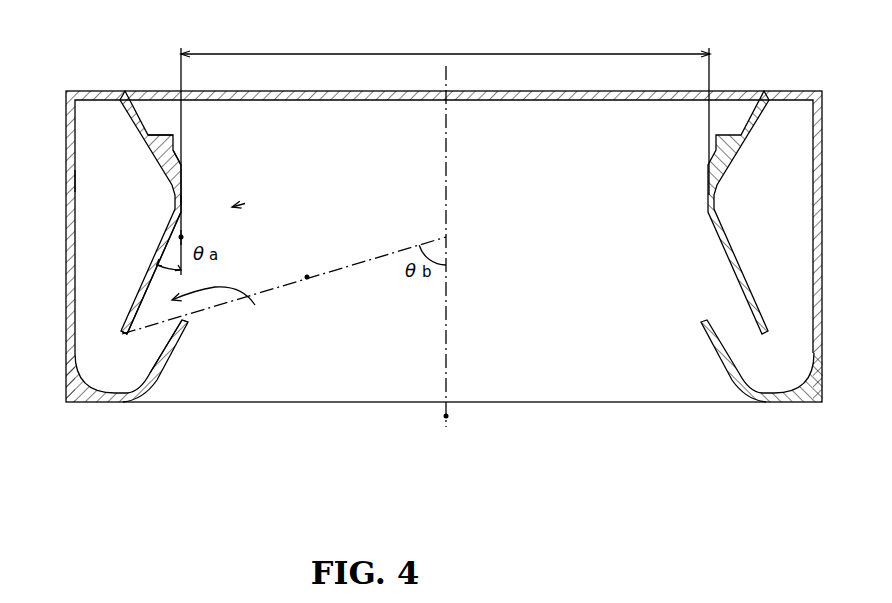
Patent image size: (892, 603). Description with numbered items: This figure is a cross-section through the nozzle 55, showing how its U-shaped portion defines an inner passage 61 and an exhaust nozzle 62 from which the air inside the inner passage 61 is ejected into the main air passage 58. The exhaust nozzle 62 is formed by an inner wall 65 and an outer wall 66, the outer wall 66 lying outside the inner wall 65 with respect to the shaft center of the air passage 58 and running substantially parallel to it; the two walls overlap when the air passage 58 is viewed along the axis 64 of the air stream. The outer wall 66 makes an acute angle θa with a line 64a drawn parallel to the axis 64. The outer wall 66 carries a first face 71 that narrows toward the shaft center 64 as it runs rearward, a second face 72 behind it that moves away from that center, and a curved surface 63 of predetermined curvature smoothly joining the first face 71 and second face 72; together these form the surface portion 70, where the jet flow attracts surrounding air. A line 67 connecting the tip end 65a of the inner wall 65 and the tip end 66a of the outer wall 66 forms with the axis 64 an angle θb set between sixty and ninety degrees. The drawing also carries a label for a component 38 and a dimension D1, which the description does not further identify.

The nozzle 55 is at (82, 90).
The sheet member (hook bracket) 38 is at (112, 90).
The air passage 58 is at (181, 163).
The curved surface 63 is at (185, 203).
The surface portion 70 is at (232, 207).
The second face 72 is at (175, 150).
The inner passage 61 is at (74, 186).
The outer wall 66 is at (133, 290).
The first face 71 is at (135, 312).
The tip end of outer wall 66a is at (121, 336).
The inner wall 65 is at (170, 360).
The tip end of inner wall 65a is at (190, 306).
The exhaust nozzle 62 is at (255, 305).
The line connecting tip ends 67 is at (307, 277).
The axis of air stream 64 is at (446, 416).
The line parallel to axis 64a is at (181, 237).
The distance D1 is at (445, 155).